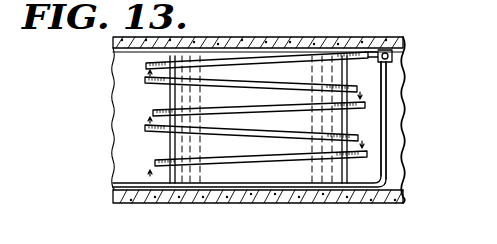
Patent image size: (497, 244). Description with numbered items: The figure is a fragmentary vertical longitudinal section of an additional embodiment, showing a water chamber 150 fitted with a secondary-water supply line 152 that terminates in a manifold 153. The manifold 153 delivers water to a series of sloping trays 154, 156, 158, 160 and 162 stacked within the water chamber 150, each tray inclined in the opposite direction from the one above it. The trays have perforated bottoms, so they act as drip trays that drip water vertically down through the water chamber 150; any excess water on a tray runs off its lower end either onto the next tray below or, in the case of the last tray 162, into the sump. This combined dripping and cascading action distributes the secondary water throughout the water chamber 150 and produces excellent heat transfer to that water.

The water chamber 150 is at (242, 176).
The secondary-water supply line 152 is at (387, 95).
The manifold 153 is at (392, 50).
The sloping tray 154 is at (261, 56).
The sloping tray 156 is at (250, 84).
The sloping tray 158 is at (245, 106).
The sloping tray 160 is at (250, 129).
The last tray 162 is at (212, 160).